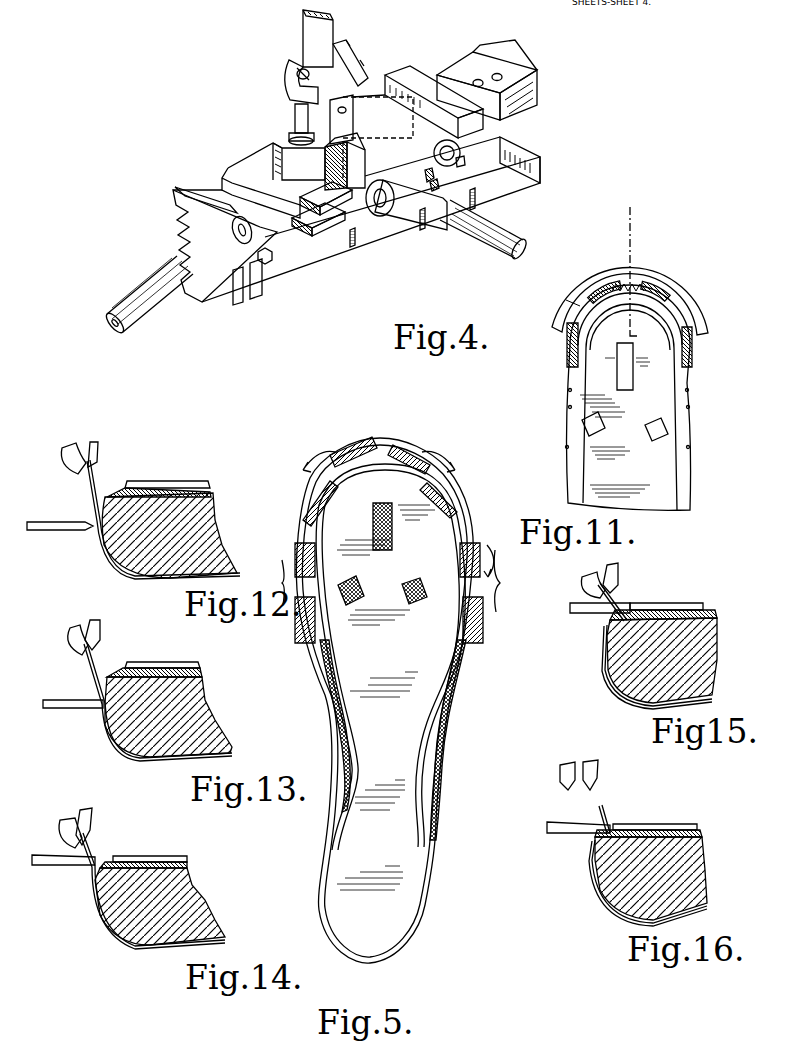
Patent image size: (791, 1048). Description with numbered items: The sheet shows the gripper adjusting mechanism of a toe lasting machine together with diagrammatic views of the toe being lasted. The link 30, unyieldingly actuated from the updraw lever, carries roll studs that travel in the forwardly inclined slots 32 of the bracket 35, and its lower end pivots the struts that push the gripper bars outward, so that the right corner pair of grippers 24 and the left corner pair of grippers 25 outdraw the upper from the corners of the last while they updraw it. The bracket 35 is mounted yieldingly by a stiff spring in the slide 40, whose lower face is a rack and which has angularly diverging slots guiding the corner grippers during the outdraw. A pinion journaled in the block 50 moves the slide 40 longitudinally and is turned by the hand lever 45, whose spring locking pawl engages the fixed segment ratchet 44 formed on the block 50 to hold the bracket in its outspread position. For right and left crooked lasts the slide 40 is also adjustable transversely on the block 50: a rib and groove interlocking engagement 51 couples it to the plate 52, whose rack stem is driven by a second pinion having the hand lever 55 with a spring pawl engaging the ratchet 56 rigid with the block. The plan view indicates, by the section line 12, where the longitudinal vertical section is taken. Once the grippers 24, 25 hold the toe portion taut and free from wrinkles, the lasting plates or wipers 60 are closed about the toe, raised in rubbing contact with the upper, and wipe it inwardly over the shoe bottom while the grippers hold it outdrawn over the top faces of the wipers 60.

In FIG. 11, the section line 12 is at (638, 268).
In FIG. 11, the right corner pair of grippers 24 is at (663, 297).
In FIG. 5, the right corner pair of grippers 24 is at (417, 448).
In FIG. 12, the right corner pair of grippers 24 is at (95, 443).
In FIG. 13, the right corner pair of grippers 24 is at (100, 633).
In FIG. 14, the right corner pair of grippers 24 is at (92, 823).
In FIG. 15, the right corner pair of grippers 24 is at (617, 568).
In FIG. 16, the right corner pair of grippers 24 is at (598, 771).
In FIG. 11, the left corner pair of grippers 25 is at (623, 257).
In FIG. 5, the left corner pair of grippers 25 is at (368, 441).
In FIG. 4, the link 30 is at (302, 14).
In FIG. 4, the forwardly inclined slots 32 is at (293, 91).
In FIG. 4, the bracket 35 is at (350, 62).
In FIG. 4, the slide 40 is at (503, 112).
In FIG. 4, the fixed segment ratchet 44 is at (470, 186).
In FIG. 4, the hand lever 45 is at (524, 250).
In FIG. 4, the block 50 is at (330, 290).
In FIG. 4, the rib and groove interlocking engagement 51 is at (318, 208).
In FIG. 4, the plate 52 is at (298, 232).
In FIG. 4, the hand lever 55 is at (118, 332).
In FIG. 4, the ratchet 56 is at (200, 306).
In FIG. 11, the lasting plates or wipers 60 is at (663, 272).
In FIG. 12, the lasting plates or wipers 60 is at (53, 532).
In FIG. 13, the lasting plates or wipers 60 is at (67, 715).
In FIG. 14, the lasting plates or wipers 60 is at (70, 862).
In FIG. 15, the lasting plates or wipers 60 is at (587, 615).
In FIG. 16, the lasting plates or wipers 60 is at (563, 835).